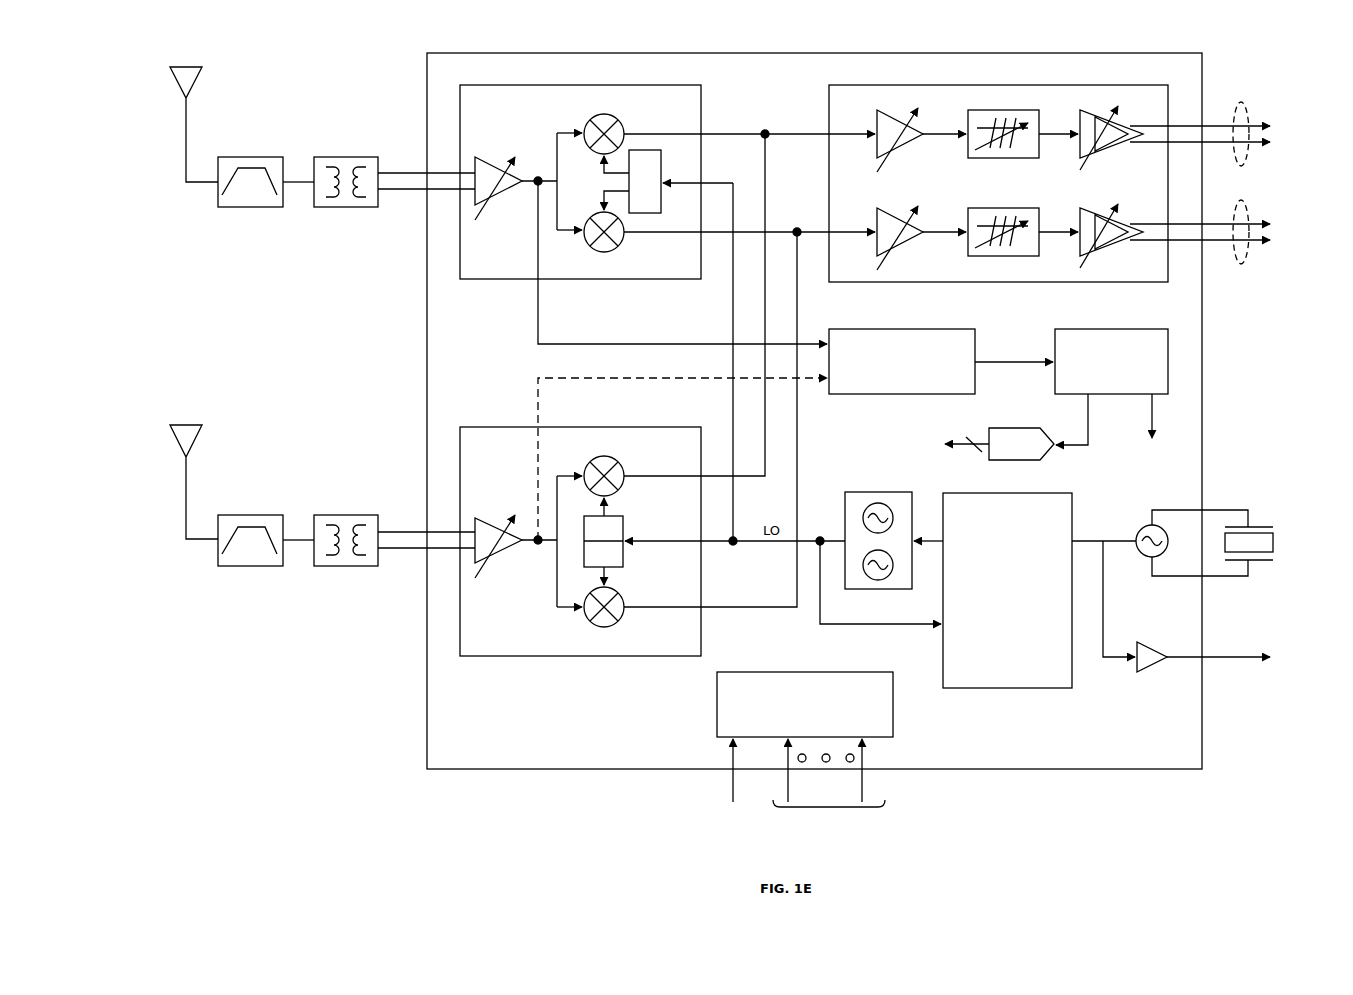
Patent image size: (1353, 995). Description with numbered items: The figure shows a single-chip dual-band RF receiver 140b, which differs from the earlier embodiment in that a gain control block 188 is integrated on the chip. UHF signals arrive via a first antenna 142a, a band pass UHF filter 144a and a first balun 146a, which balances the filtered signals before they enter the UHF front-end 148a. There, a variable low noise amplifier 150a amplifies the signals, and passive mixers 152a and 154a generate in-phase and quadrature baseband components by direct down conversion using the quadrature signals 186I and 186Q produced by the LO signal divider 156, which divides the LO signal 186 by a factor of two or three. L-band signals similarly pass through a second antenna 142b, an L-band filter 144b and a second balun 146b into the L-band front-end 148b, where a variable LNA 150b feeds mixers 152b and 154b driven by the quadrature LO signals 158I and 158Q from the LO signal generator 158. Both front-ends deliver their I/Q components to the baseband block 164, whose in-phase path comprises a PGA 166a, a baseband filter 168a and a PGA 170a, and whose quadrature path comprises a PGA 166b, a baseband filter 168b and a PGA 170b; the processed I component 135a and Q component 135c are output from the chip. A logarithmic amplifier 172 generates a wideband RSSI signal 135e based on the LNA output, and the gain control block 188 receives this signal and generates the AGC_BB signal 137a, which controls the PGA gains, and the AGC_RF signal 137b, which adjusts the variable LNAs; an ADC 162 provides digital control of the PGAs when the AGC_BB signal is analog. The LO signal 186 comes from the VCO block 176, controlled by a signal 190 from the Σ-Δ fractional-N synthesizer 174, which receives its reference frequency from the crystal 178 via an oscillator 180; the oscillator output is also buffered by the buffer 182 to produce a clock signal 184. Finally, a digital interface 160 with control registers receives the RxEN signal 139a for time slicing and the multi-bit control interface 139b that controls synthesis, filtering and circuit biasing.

The single-chip dual-band RF receiver 140b is at (1202, 733).
The first antenna 142a is at (195, 82).
The UHF filter 144a is at (247, 157).
The first balun 146a is at (339, 157).
The UHF front-end 148a is at (701, 89).
The variable low noise amplifier 150a is at (492, 157).
The mixer 152a is at (614, 116).
The mixer 154a is at (612, 248).
The LO signal divider 156 is at (660, 213).
The LO signal 186 is at (733, 312).
The quadrature signal 186I is at (597, 173).
The quadrature signal 186Q is at (597, 195).
The baseband block 164 is at (829, 88).
The programmable gain amplifier 166a is at (894, 113).
The programmable gain amplifier 166b is at (894, 211).
The baseband filter 168a is at (1040, 117).
The baseband filter 168b is at (1040, 215).
The programmable gain amplifier 170a is at (1122, 116).
The programmable gain amplifier 170b is at (1122, 214).
The processed I component signal 135a is at (1242, 102).
The processed Q component signal 135c is at (1242, 200).
The RSSI signal 135e is at (998, 359).
The logarithmic amplifier 172 is at (872, 305).
The gain control block 188 is at (1110, 328).
The ADC 162 is at (1000, 427).
The AGC_BB signal 137a is at (1088, 409).
The AGC_RF signal 137b is at (1152, 409).
The second antenna 142b is at (195, 440).
The L-band filter 144b is at (247, 515).
The second balun 146b is at (339, 515).
The L-band front-end 148b is at (701, 628).
The variable LNA 150b is at (492, 517).
The mixer 152b is at (613, 458).
The mixer 154b is at (616, 624).
The LO signal generator 158 is at (623, 525).
The LO signal 158I is at (598, 511).
The LO signal 158Q is at (616, 590).
The signal 190 is at (928, 549).
The VCO block 176 is at (869, 492).
The Σ-Δ fractional-N synthesizer 174 is at (935, 500).
The oscillator 180 is at (1138, 525).
The crystal 178 is at (1256, 527).
The buffer 182 is at (1148, 642).
The clock signal 184 is at (1230, 657).
The digital interface 160 is at (777, 672).
The signal RxEN 139a is at (733, 782).
The control interface 139b is at (886, 832).